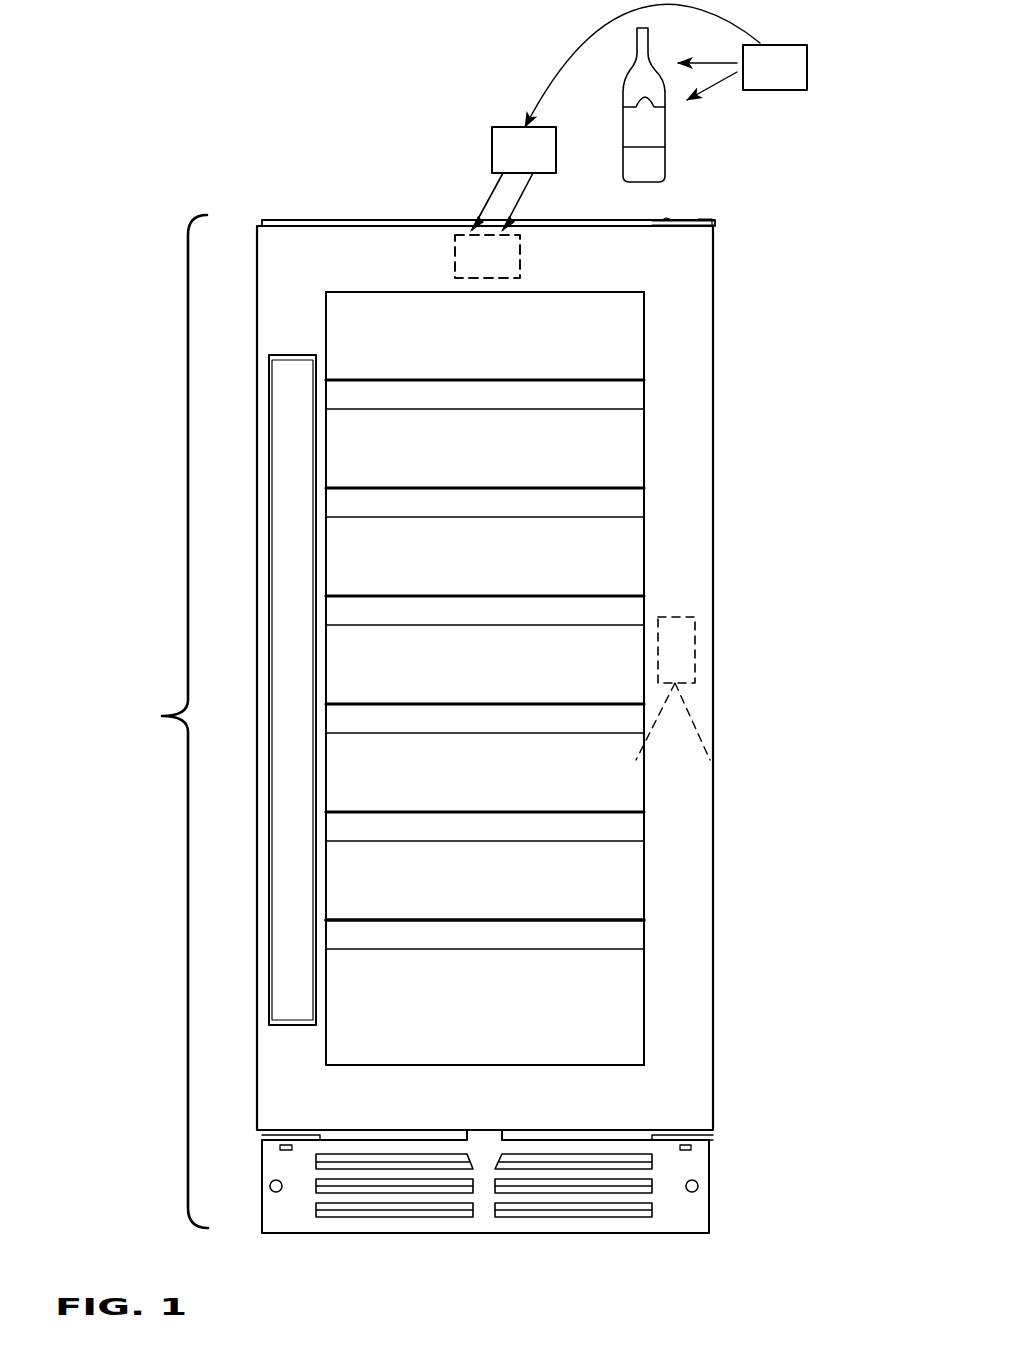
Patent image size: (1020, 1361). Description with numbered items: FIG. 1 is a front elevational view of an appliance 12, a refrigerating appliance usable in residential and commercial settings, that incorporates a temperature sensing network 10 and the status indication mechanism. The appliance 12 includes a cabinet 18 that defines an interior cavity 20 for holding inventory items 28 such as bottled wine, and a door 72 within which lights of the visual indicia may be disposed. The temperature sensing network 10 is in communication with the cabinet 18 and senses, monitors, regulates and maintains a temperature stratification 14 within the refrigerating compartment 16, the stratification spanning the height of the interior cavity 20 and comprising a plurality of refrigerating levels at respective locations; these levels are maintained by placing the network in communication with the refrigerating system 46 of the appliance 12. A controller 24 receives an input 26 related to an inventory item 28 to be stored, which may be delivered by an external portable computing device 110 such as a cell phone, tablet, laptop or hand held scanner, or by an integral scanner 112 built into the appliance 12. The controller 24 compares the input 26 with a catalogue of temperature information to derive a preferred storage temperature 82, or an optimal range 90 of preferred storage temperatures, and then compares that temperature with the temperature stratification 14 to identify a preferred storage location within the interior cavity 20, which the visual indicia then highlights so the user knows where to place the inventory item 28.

The temperature sensing network 10 is at (602, 328).
The appliance 12 is at (398, 213).
The temperature stratification 14 is at (167, 721).
The refrigerating compartment 16 is at (573, 587).
The cabinet 18 is at (713, 380).
The interior cavity 20 is at (587, 892).
The controller 24 is at (455, 257).
The input 26 is at (500, 143).
The inventory item 28 is at (653, 133).
The refrigerating system 46 is at (442, 1233).
The door 72 is at (675, 502).
The preferred storage temperature 82 is at (482, 211).
The optimal range 90 is at (522, 200).
The portable computing device 110 is at (800, 62).
The integral scanner 112 is at (695, 658).